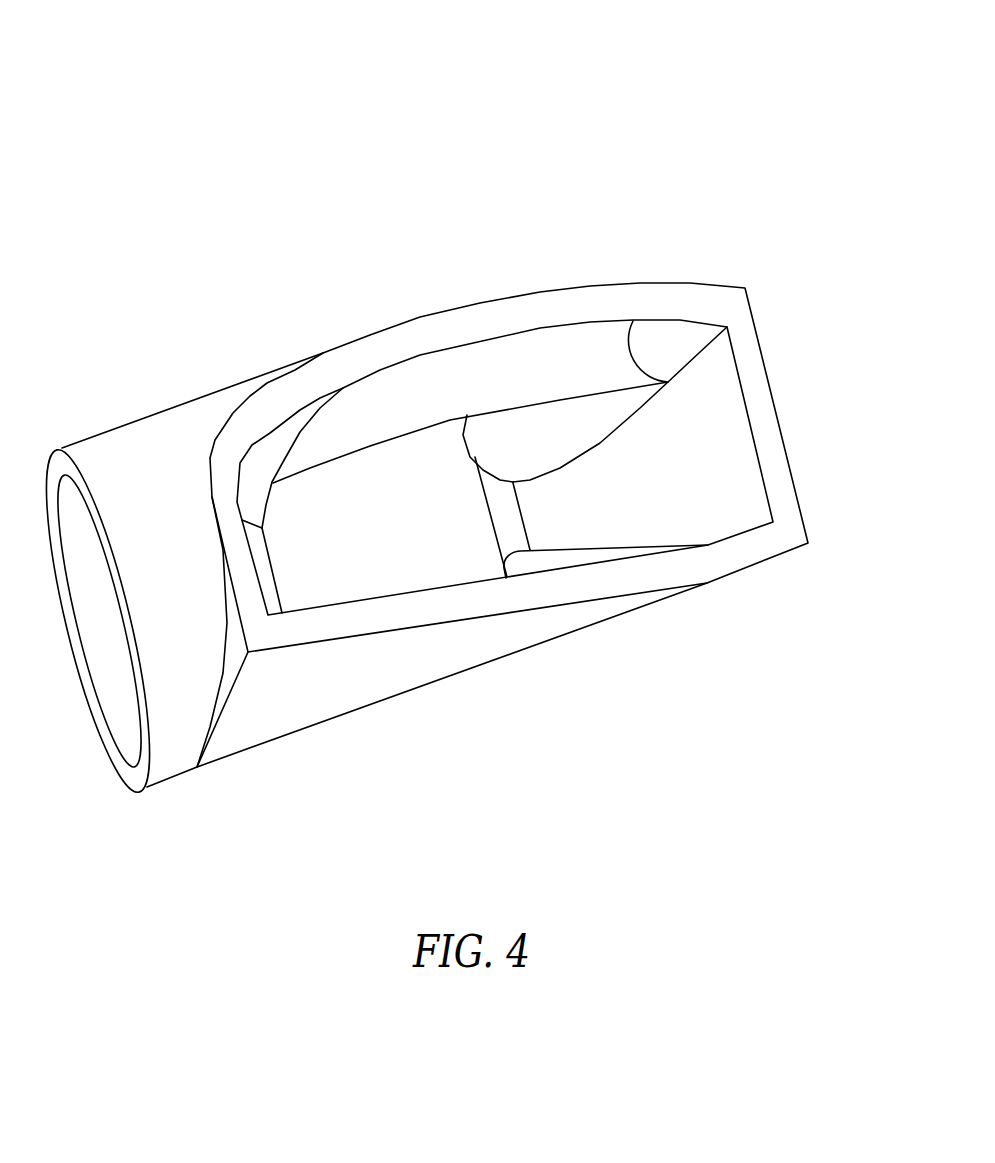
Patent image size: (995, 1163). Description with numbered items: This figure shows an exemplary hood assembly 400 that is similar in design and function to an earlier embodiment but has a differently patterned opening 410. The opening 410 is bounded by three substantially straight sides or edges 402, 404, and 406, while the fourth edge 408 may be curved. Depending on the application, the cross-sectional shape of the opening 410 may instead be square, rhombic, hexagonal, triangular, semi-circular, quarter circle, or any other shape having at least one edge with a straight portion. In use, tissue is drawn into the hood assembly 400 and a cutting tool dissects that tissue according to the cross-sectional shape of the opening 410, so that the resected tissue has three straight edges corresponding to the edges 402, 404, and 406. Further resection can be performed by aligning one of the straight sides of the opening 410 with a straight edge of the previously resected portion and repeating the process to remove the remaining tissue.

The hood assembly 400 is at (305, 64).
The straight edge of opening 402 is at (759, 462).
The straight edge of opening 404 is at (528, 582).
The straight edge of opening 406 is at (253, 558).
The curved edge of opening 408 is at (442, 348).
The opening 410 is at (715, 387).